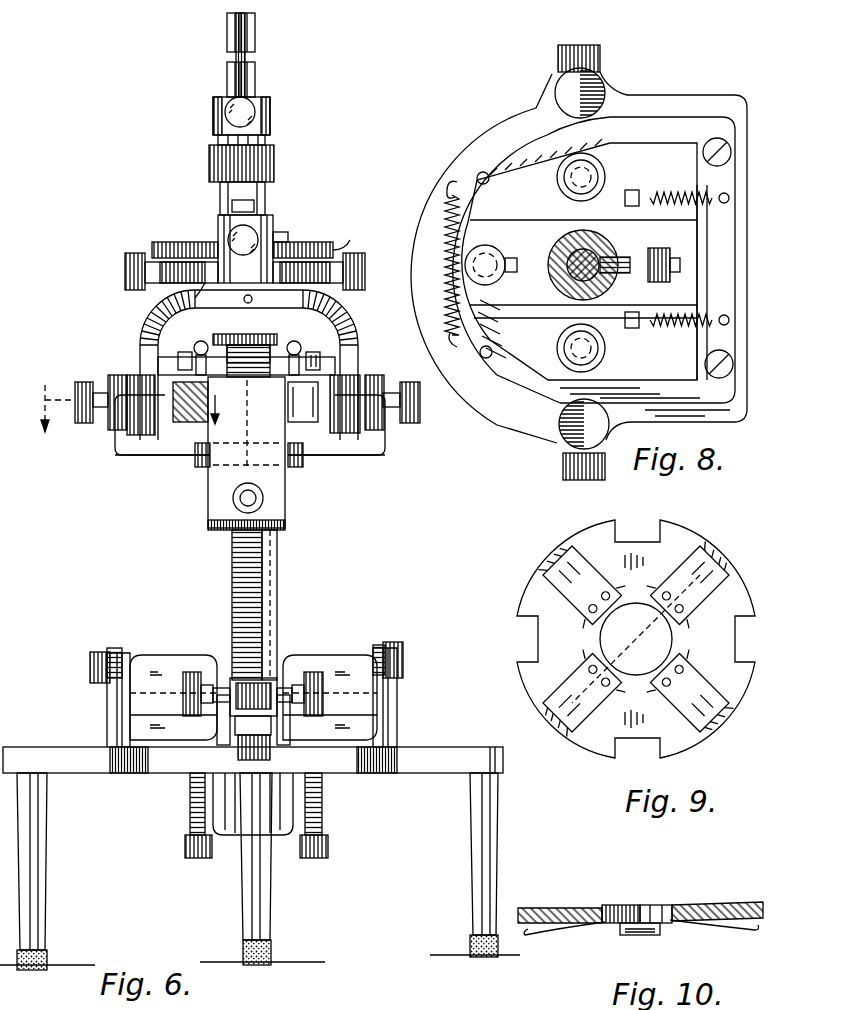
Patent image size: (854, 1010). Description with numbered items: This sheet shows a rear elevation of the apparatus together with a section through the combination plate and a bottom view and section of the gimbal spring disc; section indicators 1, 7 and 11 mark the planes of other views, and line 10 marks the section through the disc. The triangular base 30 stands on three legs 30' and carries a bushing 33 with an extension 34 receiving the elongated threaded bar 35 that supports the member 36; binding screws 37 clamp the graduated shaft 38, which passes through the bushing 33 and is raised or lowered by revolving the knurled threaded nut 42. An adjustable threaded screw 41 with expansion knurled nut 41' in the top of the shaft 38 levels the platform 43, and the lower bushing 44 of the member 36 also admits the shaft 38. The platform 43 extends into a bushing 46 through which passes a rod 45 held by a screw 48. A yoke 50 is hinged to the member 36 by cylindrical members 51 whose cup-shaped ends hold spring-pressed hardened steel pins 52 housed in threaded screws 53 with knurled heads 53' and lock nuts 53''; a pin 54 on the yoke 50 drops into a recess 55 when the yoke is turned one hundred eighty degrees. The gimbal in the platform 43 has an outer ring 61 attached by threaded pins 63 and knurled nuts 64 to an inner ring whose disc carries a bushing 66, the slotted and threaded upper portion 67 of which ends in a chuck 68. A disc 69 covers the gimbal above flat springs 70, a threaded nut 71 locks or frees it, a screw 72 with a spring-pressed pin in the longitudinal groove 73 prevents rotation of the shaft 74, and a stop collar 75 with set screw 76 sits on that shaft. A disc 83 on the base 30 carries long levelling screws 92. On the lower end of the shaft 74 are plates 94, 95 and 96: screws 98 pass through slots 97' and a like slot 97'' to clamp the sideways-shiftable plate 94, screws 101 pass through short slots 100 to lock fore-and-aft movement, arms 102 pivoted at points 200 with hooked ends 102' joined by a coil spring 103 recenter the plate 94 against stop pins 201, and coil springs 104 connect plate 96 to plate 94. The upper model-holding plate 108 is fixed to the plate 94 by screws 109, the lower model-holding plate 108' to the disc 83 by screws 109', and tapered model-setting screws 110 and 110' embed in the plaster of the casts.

In FIG. 6, the section line 1- 1 is at (255, 30).
In FIG. 6, the section line 7- 7 is at (127, 408).
In FIG. 9, the line 10— 10 is at (713, 517).
In FIG. 8, the section line 11- 11 is at (577, 25).
In FIG. 6, the triangular base 30 is at (253, 770).
In FIG. 6, the legs 30' is at (260, 871).
In FIG. 6, the bushing 33 is at (235, 720).
In FIG. 6, the extension 34 is at (232, 690).
In FIG. 6, the elongated threaded bar 35 is at (262, 565).
In FIG. 6, the member 36 is at (270, 480).
In FIG. 6, the screws 37 is at (195, 672).
In FIG. 6, the graduated shaft 38 is at (277, 592).
In FIG. 6, the adjustable threaded screw 41 is at (274, 344).
In FIG. 6, the expansion knurled nut 41' is at (261, 328).
In FIG. 6, the knurled threaded nut 42 is at (205, 440).
In FIG. 6, the platform 43 is at (219, 299).
In FIG. 6, the bushing 44 is at (285, 525).
In FIG. 6, the rod 45 is at (254, 204).
In FIG. 6, the bushing 46 is at (228, 225).
In FIG. 6, the screw 48 is at (233, 236).
In FIG. 6, the yoke 50 is at (158, 460).
In FIG. 6, the cylindrical members 51 is at (195, 445).
In FIG. 6, the hardened steel pin 52 is at (178, 420).
In FIG. 6, the threaded screw 53 is at (246, 407).
In FIG. 6, the knurled terminal head 53' is at (78, 427).
In FIG. 6, the lock nut 53'' is at (245, 426).
In FIG. 6, the pin 54 is at (261, 299).
In FIG. 6, the recess 55 is at (240, 498).
In FIG. 6, the outer ring-like portion 61 is at (195, 298).
In FIG. 6, the threaded pins 63 is at (125, 268).
In FIG. 6, the knurled nut 64 is at (150, 275).
In FIG. 8, the bushing 66 is at (617, 246).
In FIG. 6, the upper portion 67 is at (220, 195).
In FIG. 6, the chuck 68 is at (274, 158).
In FIG. 6, the disc 69 is at (315, 242).
In FIG. 9, the disc 69 is at (735, 590).
In FIG. 10, the disc 69 is at (600, 906).
In FIG. 6, the flat springs 70 is at (175, 247).
In FIG. 9, the flat springs 70 is at (635, 638).
In FIG. 10, the flat springs 70 is at (625, 938).
In FIG. 6, the threaded nut 71 is at (288, 236).
In FIG. 8, the screw 72 is at (668, 252).
In FIG. 6, the longitudinal groove 73 is at (234, 50).
In FIG. 8, the longitudinal groove 73 is at (600, 285).
In FIG. 6, the shaft 74 is at (256, 60).
In FIG. 8, the shaft 74 is at (570, 275).
In FIG. 6, the stop collar 75 is at (270, 126).
In FIG. 6, the set screw 76 is at (252, 110).
In FIG. 6, the disc 83 is at (355, 722).
In FIG. 6, the long screw 92 is at (190, 820).
In FIG. 6, the lower plate 94 is at (135, 383).
In FIG. 8, the lower plate 94 is at (508, 398).
In FIG. 6, the plate 95 is at (158, 366).
In FIG. 8, the plate 95 is at (557, 372).
In FIG. 6, the upper plate 96 is at (262, 380).
In FIG. 8, the upper plate 96 is at (707, 240).
In FIG. 8, the slot 97' is at (619, 150).
In FIG. 8, the boss 97'' is at (555, 365).
In FIG. 6, the screw 98 is at (178, 360).
In FIG. 8, the screw 98 is at (557, 178).
In FIG. 8, the short slot 100 is at (505, 262).
In FIG. 8, the screw 101 is at (495, 240).
In FIG. 8, the arms 102 is at (579, 257).
In FIG. 8, the hooked ends 102' is at (426, 276).
In FIG. 8, the coil spring 103 is at (445, 265).
In FIG. 6, the coil springs 104 is at (198, 340).
In FIG. 8, the coil springs 104 is at (677, 259).
In FIG. 6, the upper model-holding plate 108 is at (255, 467).
In FIG. 6, the lower model-holding plate 108' is at (252, 680).
In FIG. 8, the screws 109 is at (609, 275).
In FIG. 6, the screws 109' is at (251, 779).
In FIG. 8, the knurled knob 110 is at (584, 260).
In FIG. 6, the model-setting tapered screws 110' is at (248, 653).
In FIG. 8, the pivot points 200 is at (717, 138).
In FIG. 8, the stop pins 201 is at (477, 174).